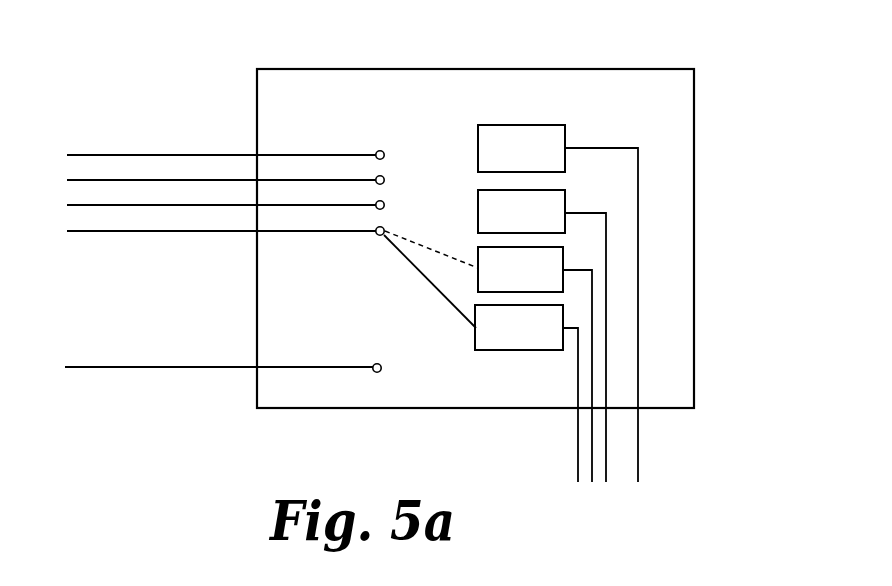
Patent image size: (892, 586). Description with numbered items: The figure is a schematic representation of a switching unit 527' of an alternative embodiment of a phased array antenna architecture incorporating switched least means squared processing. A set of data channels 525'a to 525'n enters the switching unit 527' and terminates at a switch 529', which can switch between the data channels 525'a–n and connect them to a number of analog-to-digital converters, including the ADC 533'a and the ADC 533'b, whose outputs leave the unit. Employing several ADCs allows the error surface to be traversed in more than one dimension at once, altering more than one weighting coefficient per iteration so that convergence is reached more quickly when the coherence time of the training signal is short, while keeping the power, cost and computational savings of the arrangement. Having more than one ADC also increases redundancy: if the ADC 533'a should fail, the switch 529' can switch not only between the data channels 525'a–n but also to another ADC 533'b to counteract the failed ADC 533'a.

The switching unit 527' is at (475, 210).
The data channel 525'a is at (225, 164).
The data channel 525'n is at (211, 400).
The switch 529' is at (431, 339).
The ADC 533'a is at (633, 393).
The ADC 533'b is at (643, 303).